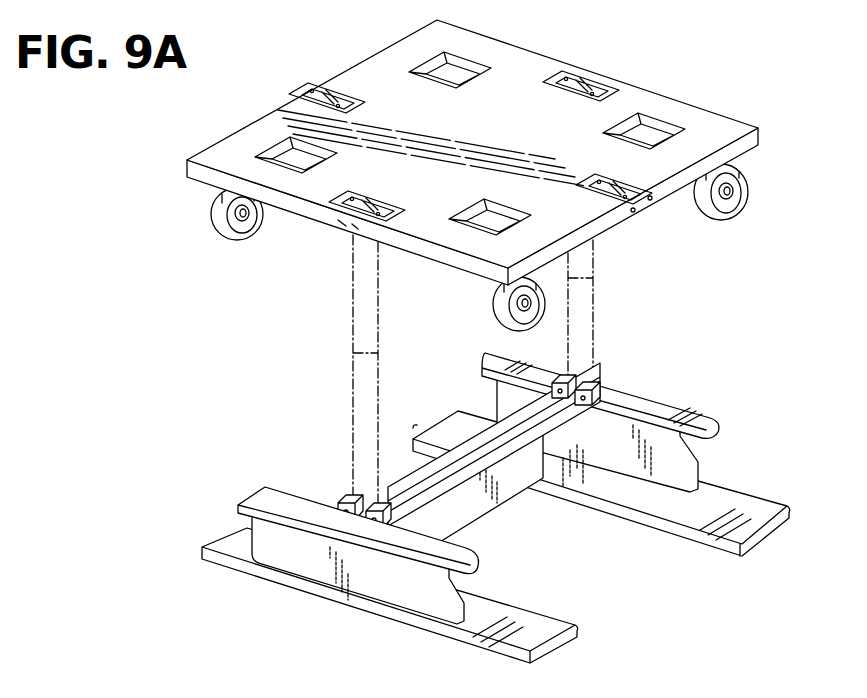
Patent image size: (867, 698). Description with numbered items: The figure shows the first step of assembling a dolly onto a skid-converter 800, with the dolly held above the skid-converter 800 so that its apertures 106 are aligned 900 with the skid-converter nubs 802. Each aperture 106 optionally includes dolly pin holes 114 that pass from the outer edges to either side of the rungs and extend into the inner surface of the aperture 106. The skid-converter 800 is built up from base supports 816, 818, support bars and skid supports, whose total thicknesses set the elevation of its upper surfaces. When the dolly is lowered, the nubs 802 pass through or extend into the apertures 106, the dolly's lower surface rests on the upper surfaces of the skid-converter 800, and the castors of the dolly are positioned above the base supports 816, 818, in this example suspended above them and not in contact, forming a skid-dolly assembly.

The aperture 106 is at (311, 87).
The dolly pin hole 114 is at (342, 222).
The alignment 900 is at (353, 344).
The skid-converter 800 is at (523, 497).
The skid-converter nub 802 is at (573, 378).
The base support 816 is at (545, 633).
The base support 818 is at (756, 512).